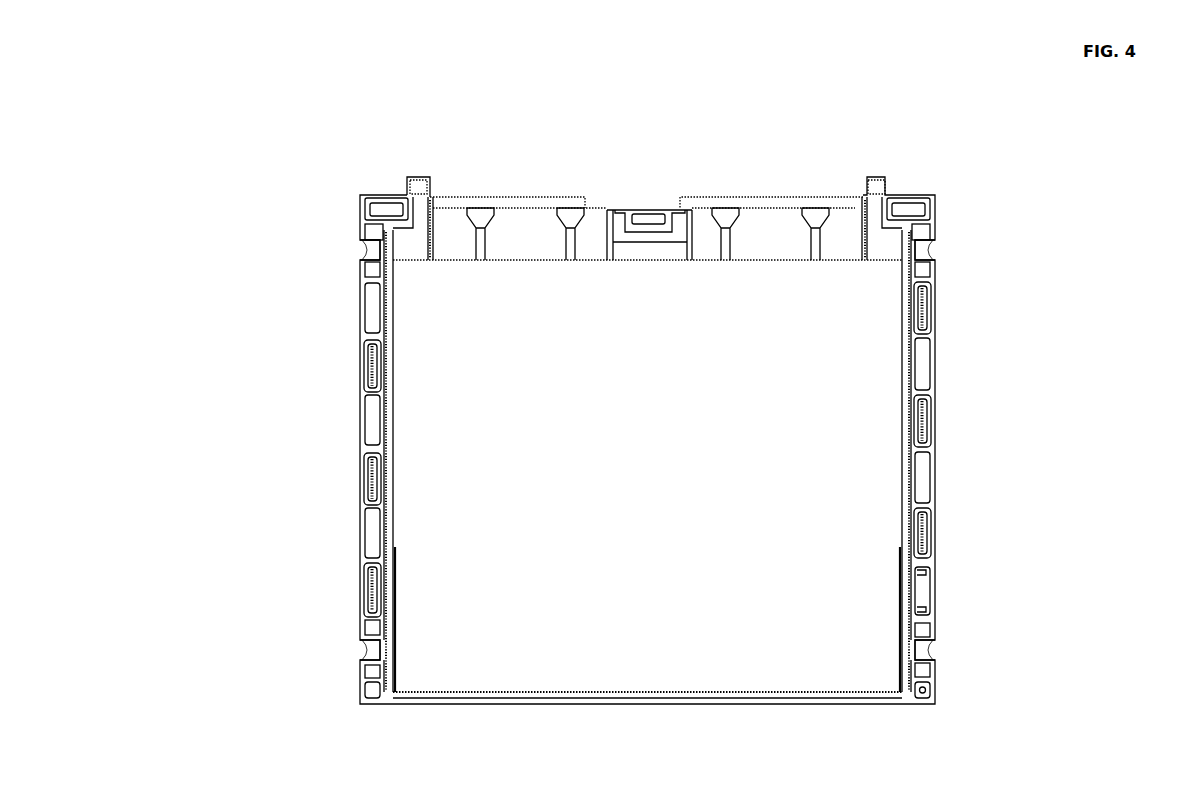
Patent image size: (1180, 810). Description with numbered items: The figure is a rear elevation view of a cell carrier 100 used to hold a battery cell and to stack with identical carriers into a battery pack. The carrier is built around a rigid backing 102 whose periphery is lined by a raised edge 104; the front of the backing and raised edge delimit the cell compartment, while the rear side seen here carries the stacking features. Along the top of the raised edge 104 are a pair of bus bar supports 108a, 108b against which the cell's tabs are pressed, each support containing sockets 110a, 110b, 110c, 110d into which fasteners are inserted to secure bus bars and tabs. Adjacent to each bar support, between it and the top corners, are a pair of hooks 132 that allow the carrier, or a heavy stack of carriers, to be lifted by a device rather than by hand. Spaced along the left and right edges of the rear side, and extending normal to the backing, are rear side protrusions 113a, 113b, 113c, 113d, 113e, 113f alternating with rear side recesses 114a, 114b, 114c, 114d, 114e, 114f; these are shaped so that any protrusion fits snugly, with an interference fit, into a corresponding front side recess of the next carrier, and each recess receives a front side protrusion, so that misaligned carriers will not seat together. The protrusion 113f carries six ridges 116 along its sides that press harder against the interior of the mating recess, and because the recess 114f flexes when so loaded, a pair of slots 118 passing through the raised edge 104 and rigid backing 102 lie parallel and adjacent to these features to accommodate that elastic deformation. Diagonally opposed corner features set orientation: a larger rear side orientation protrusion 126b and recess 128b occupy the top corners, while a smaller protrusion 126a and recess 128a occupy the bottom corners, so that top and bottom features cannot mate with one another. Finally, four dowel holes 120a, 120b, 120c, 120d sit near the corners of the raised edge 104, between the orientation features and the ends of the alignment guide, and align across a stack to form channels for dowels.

The cell carrier 100 is at (296, 90).
The rigid backing 102 is at (705, 658).
The raised edge 104 is at (617, 698).
The bus bar support 108a is at (765, 197).
The bus bar support 108b is at (515, 197).
The socket 110a is at (480, 240).
The socket 110b is at (570, 240).
The socket 110c is at (725, 240).
The socket 110d is at (815, 240).
The rear side protrusion 113a is at (372, 300).
The rear side protrusion 113b is at (372, 415).
The rear side protrusion 113c is at (372, 532).
The rear side protrusion 113d is at (925, 365).
The rear side protrusion 113e is at (925, 473).
The rear side protrusion 113f is at (925, 598).
The rear side recess 114a is at (925, 300).
The rear side recess 114b is at (925, 418).
The rear side recess 114c is at (925, 528).
The rear side recess 114d is at (372, 360).
The rear side recess 114e is at (372, 477).
The rear side recess 114f is at (372, 590).
The ridges 116 is at (925, 572).
The slots 118 is at (394, 592).
The dowel hole 120a is at (360, 250).
The dowel hole 120b is at (360, 648).
The dowel hole 120c is at (935, 648).
The dowel hole 120d is at (935, 250).
The rear side orientation protrusion 126a is at (373, 690).
The rear side orientation protrusion 126b is at (900, 212).
The rear side orientation recess 128a is at (922, 694).
The rear side orientation recess 128b is at (390, 212).
The hooks 132 is at (407, 180).